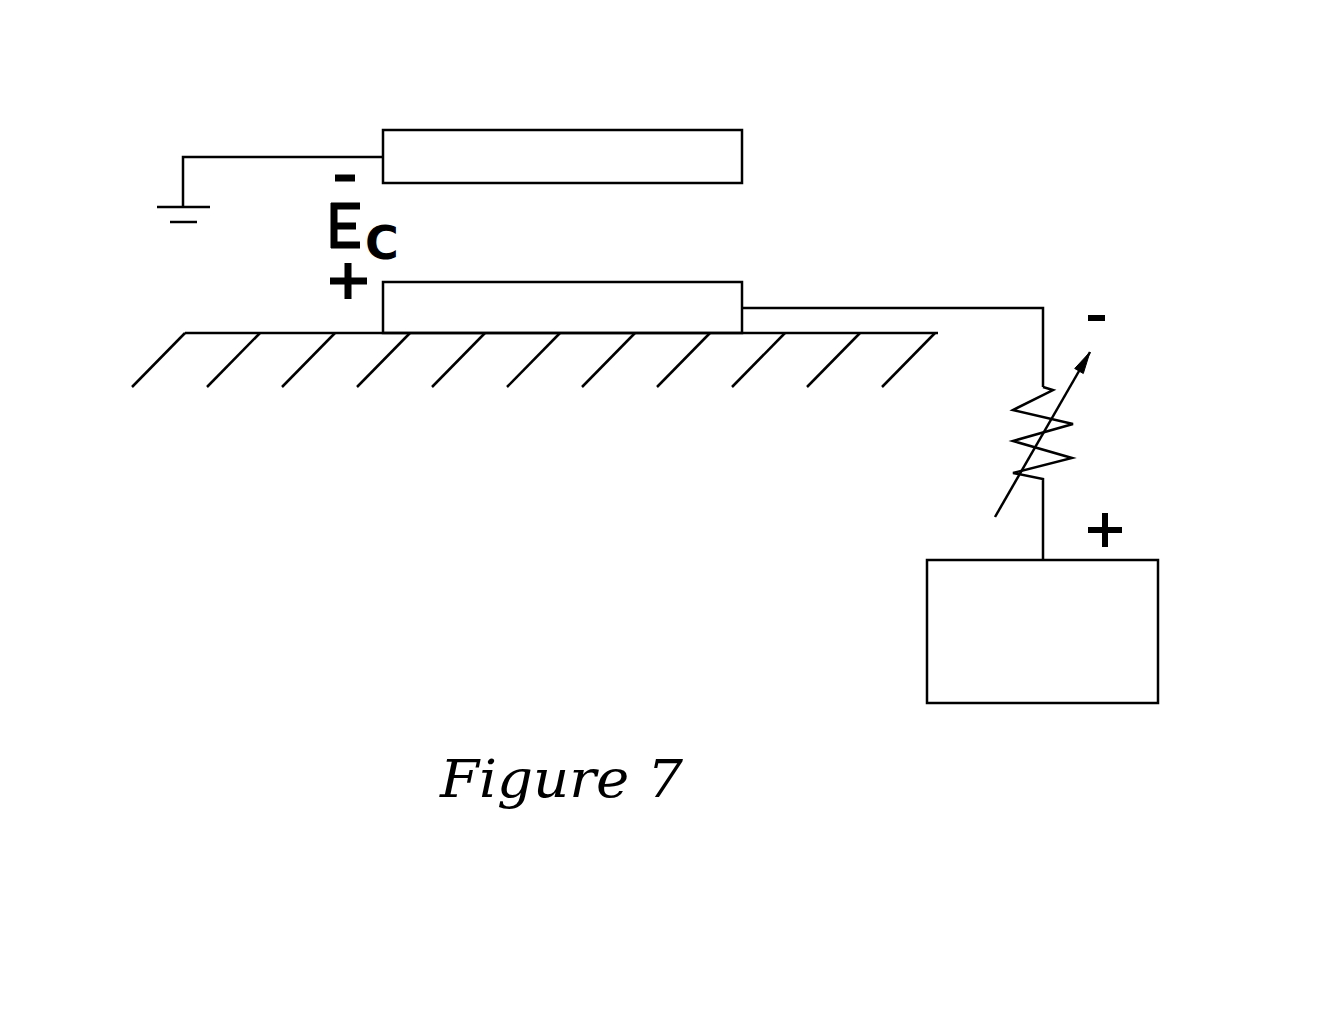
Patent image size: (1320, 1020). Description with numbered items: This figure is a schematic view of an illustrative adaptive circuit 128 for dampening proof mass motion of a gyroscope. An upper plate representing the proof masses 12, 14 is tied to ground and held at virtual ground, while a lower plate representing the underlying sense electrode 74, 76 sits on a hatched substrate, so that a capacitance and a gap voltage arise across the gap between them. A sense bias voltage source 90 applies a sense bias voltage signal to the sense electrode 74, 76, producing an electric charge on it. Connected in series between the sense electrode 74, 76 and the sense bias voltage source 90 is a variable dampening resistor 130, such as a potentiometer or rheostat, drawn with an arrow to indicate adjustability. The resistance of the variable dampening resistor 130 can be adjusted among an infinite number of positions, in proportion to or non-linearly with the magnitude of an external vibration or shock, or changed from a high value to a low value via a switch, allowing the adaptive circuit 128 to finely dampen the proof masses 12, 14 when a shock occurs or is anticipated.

The proof mass 12 is at (492, 118).
The proof mass 14 is at (400, 138).
The sense electrode 74 is at (562, 366).
The sense electrode 76 is at (595, 305).
The sense bias voltage source 90 is at (1158, 628).
The adaptive circuit 128 is at (1087, 404).
The variable dampening resistor 130 is at (1018, 409).